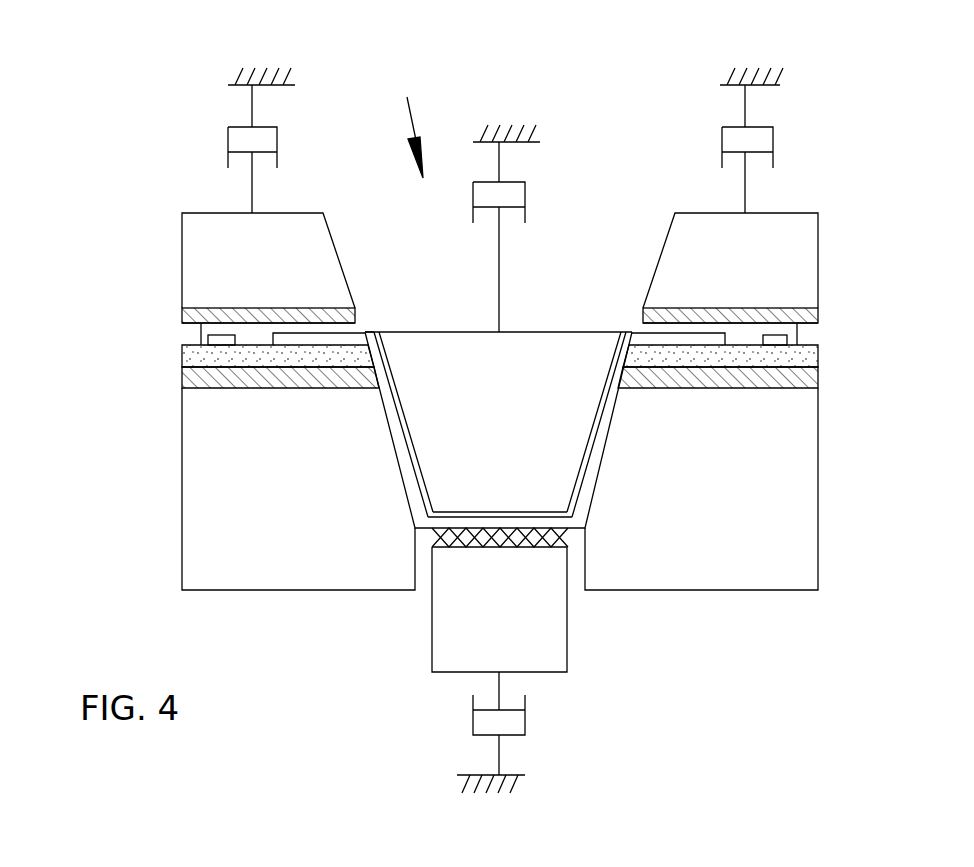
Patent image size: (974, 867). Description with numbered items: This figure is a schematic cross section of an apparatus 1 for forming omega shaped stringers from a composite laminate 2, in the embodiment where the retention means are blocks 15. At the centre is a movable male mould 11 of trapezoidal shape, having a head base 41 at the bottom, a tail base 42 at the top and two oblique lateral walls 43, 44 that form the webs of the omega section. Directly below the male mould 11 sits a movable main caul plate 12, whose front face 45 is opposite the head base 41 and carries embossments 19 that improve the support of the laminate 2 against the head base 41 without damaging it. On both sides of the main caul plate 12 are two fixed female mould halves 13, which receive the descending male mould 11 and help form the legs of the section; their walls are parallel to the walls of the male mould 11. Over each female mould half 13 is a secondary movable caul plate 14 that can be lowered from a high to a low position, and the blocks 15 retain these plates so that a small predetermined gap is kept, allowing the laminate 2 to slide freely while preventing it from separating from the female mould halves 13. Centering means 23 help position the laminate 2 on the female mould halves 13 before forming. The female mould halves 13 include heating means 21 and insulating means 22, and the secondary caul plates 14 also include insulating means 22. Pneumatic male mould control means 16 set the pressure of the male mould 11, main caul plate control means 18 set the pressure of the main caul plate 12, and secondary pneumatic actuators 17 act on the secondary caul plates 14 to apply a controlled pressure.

The apparatus 1 is at (409, 121).
The composite laminate 2 is at (366, 328).
The movable male mould 11 is at (563, 340).
The movable main caul plate 12 is at (449, 627).
The fixed female mould halves 13 is at (200, 488).
The secondary movable caul plates 14 is at (195, 243).
The blocks 15 is at (190, 333).
The male mould control means 16 is at (500, 162).
The secondary pneumatic actuators 17 is at (252, 103).
The main caul plate control means 18 is at (500, 752).
The embossments 19 is at (553, 548).
The heating means 21 is at (183, 352).
The insulating means 22 is at (185, 314).
The centering means 23 is at (223, 343).
The head base 41 is at (502, 512).
The tail base 42 is at (468, 333).
The oblique lateral wall 43 is at (407, 432).
The oblique lateral wall 44 is at (588, 448).
The front face 45 is at (490, 548).